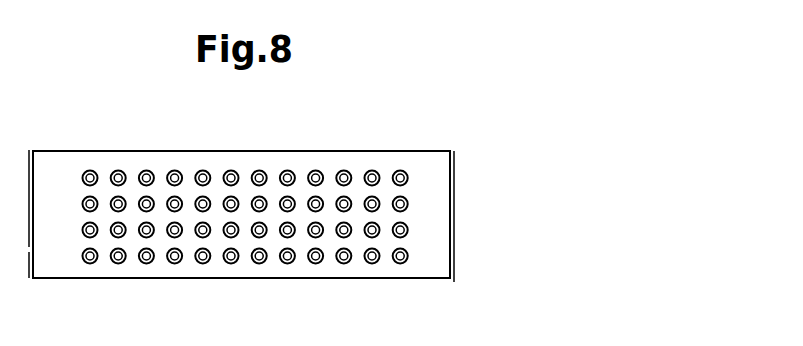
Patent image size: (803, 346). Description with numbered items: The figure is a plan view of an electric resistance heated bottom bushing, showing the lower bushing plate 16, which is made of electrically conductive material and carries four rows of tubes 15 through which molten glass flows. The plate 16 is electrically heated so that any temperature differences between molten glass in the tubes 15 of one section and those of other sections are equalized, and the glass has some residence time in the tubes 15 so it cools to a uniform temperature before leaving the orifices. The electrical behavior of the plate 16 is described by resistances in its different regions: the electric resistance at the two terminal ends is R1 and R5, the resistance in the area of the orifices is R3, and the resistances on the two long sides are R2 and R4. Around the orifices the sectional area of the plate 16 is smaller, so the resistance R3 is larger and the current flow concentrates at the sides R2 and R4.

The tubes 15 is at (405, 200).
The lower bushing plate 16 is at (432, 214).
The electric resistance at terminal end R1 is at (51, 170).
The electric resistance on long side R2 is at (211, 163).
The electric resistance in orifice area R3 is at (217, 213).
The electric resistance on long side R4 is at (206, 270).
The electric resistance at terminal end R5 is at (422, 262).